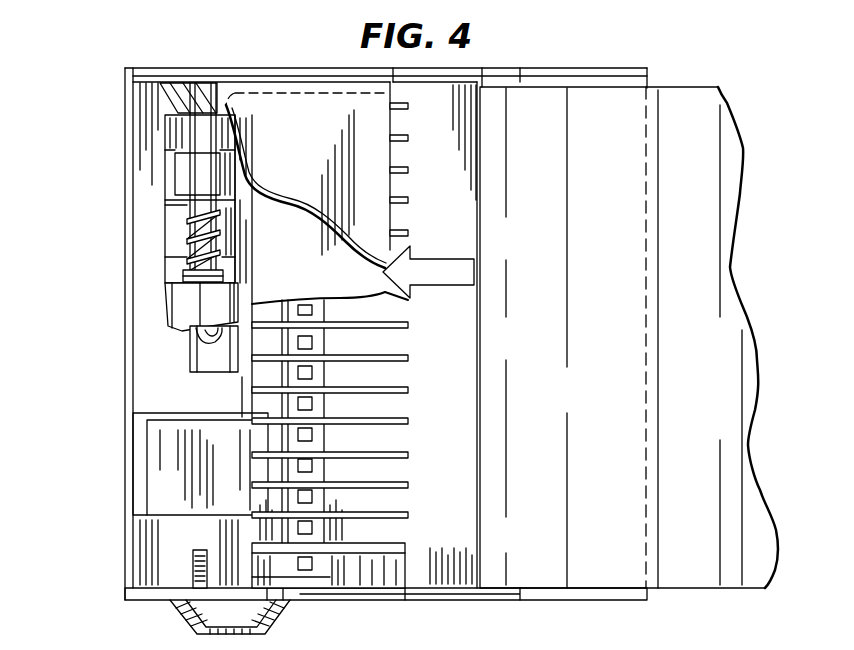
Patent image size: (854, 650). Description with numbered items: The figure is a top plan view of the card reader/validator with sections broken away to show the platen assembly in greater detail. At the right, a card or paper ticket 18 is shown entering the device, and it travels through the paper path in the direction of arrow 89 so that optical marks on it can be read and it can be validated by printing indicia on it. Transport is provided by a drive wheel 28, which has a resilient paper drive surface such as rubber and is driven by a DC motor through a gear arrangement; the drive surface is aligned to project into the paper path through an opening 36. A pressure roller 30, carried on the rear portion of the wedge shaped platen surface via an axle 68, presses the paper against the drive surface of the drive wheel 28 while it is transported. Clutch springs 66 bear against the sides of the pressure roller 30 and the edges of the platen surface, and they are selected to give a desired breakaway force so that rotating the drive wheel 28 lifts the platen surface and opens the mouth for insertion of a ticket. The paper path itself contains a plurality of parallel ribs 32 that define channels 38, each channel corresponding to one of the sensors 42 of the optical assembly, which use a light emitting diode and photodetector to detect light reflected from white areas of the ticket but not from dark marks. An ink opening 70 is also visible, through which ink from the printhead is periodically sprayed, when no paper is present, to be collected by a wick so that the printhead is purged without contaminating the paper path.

The card or paper ticket 18 is at (709, 578).
The drive wheel 28 is at (213, 357).
The pressure roller 30 is at (165, 303).
The parallel ribs 32 is at (408, 325).
The opening 36 is at (193, 360).
The channels 38 is at (400, 437).
The sensors 42 is at (312, 468).
The clutch springs 66 is at (193, 268).
The axle 68 is at (175, 173).
The ink opening 70 is at (207, 550).
The arrow 89 is at (438, 249).